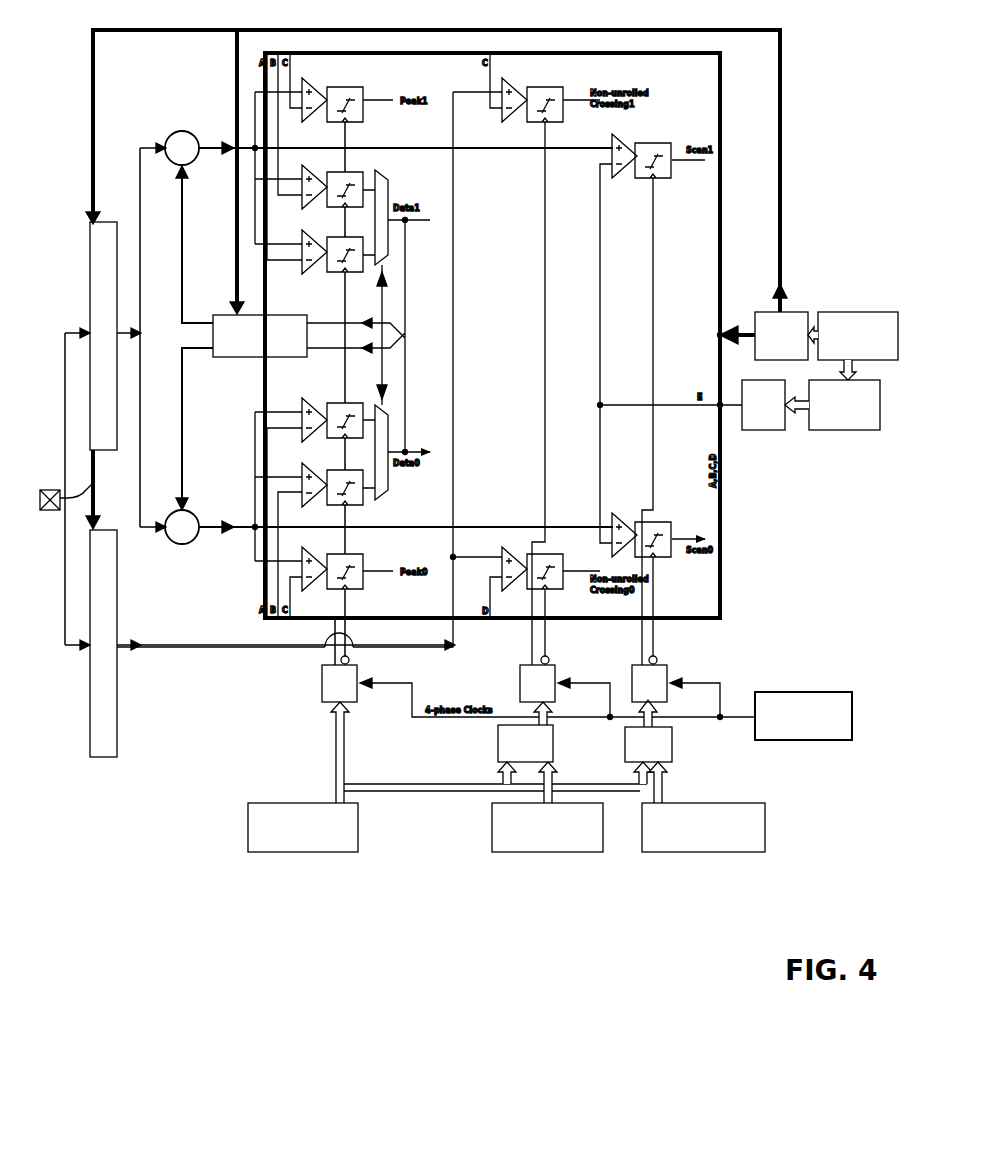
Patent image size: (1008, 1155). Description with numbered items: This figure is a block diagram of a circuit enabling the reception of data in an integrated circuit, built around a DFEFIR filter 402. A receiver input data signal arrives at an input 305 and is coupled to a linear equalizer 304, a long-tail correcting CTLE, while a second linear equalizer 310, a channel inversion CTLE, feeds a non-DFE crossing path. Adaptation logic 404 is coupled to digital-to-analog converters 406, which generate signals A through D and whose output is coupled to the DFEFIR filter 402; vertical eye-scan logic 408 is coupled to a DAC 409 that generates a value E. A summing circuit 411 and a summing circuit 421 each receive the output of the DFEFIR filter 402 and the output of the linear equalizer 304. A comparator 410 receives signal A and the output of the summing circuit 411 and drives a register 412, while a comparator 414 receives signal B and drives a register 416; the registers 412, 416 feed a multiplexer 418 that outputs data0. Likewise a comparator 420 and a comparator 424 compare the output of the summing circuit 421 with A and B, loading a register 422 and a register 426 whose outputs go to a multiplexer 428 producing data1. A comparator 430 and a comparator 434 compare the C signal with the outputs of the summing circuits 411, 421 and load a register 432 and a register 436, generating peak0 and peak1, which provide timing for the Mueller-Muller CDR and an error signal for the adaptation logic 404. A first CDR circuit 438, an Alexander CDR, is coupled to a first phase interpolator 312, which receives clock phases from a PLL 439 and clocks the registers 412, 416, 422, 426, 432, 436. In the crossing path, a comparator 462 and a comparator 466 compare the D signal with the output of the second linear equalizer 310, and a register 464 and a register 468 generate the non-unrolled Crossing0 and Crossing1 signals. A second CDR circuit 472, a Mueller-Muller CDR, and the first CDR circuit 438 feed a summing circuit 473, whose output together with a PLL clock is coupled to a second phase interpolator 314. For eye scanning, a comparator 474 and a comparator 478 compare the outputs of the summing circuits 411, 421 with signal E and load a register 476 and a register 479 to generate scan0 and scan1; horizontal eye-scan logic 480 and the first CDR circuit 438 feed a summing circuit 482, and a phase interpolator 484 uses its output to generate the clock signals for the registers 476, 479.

The linear equalizer 304 is at (90, 260).
The input 305 is at (95, 483).
The second linear equalizer 310 is at (108, 757).
The first phase interpolator 312 is at (322, 696).
The second phase interpolator 314 is at (558, 674).
The DFEFIR filter 402 is at (268, 357).
The adaptation logic 404 is at (850, 312).
The digital-to-analog converters 406 is at (796, 302).
The vertical eye-scan logic 408 is at (852, 430).
The DAC 409 is at (778, 430).
The comparator 410 is at (314, 406).
The summing circuit 411 is at (174, 543).
The register 412 is at (366, 404).
The comparator 414 is at (302, 486).
The register 416 is at (343, 506).
The multiplexer 418 is at (386, 412).
The comparator 420 is at (300, 268).
The summing circuit 421 is at (186, 132).
The register 422 is at (328, 276).
The comparator 424 is at (302, 196).
The register 426 is at (363, 160).
The multiplexer 428 is at (388, 182).
The comparator 430 is at (346, 589).
The register 432 is at (364, 560).
The comparator 434 is at (326, 86).
The register 436 is at (324, 128).
The first CDR circuit 438 is at (300, 852).
The PLL 439 is at (800, 740).
The comparator 462 is at (508, 554).
The register 464 is at (554, 556).
The comparator 466 is at (520, 94).
The register 468 is at (526, 118).
The second CDR circuit 472 is at (540, 852).
The summing circuit 473 is at (498, 744).
The comparator 474 is at (620, 510).
The register 476 is at (652, 522).
The comparator 478 is at (626, 140).
The register 479 is at (648, 180).
The horizontal eye-scan logic 480 is at (698, 852).
The summing circuit 482 is at (674, 752).
The phase interpolator 484 is at (668, 672).